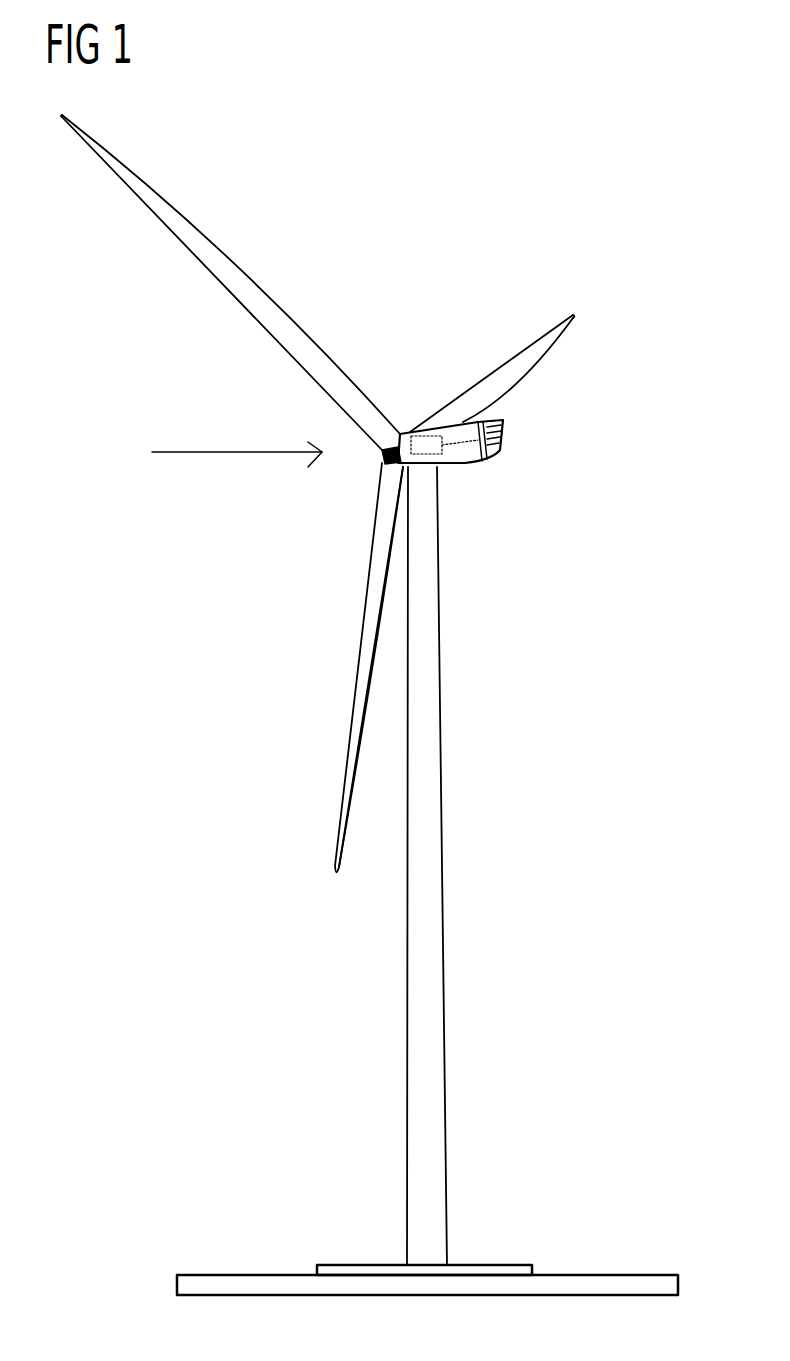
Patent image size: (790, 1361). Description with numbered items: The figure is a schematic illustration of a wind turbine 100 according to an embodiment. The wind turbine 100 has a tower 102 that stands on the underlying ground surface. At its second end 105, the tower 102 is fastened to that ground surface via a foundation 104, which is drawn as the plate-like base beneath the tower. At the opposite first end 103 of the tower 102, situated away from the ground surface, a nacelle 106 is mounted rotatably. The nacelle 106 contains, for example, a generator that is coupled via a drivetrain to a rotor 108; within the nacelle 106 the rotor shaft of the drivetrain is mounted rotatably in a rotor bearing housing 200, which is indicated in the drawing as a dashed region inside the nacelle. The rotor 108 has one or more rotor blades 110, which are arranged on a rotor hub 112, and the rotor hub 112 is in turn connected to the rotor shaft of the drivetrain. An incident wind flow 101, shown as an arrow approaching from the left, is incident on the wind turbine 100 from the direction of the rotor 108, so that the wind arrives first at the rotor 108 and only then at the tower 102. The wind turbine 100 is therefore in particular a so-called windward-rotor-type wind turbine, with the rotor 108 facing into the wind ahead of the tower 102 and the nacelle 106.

The wind turbine 100 is at (537, 745).
The incident wind flow 101 is at (237, 468).
The tower 102 is at (425, 960).
The first end 103 is at (427, 470).
The foundation 104 is at (537, 1283).
The second end 105 is at (425, 1253).
The nacelle 106 is at (463, 470).
The rotor 108 is at (404, 358).
The rotor blade 110 is at (260, 323).
The rotor hub 112 is at (385, 458).
The rotor bearing housing 200 is at (430, 428).